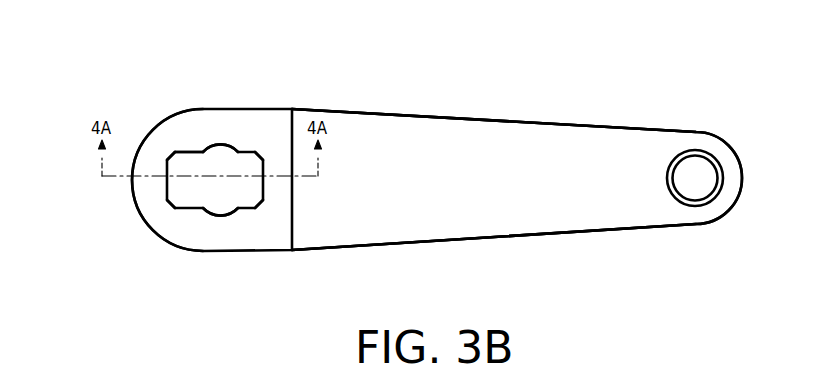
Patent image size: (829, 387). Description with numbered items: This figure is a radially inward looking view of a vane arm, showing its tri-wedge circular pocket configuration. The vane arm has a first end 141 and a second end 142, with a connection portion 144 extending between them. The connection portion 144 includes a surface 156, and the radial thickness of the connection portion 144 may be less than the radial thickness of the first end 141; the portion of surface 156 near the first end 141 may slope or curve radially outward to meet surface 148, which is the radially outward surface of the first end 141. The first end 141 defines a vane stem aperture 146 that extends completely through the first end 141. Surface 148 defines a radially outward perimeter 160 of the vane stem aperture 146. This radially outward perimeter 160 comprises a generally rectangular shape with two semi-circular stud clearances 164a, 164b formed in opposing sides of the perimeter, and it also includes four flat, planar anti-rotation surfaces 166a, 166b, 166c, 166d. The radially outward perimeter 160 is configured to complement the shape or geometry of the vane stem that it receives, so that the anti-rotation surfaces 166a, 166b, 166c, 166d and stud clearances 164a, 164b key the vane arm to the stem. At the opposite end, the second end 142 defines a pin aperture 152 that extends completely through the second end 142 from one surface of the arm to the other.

The first end 141 is at (129, 194).
The second end 142 is at (702, 213).
The connection portion 144 is at (385, 130).
The vane stem aperture 146 is at (230, 197).
The surface 148 is at (281, 242).
The pin aperture 152 is at (691, 163).
The surface 156 is at (451, 158).
The radially outward perimeter 160 is at (198, 142).
The semi-circular stud clearance 164a is at (211, 147).
The semi-circular stud clearance 164b is at (217, 215).
The anti-rotation surface 166a is at (183, 156).
The anti-rotation surface 166b is at (272, 140).
The anti-rotation surface 166c is at (186, 203).
The anti-rotation surface 166d is at (250, 207).